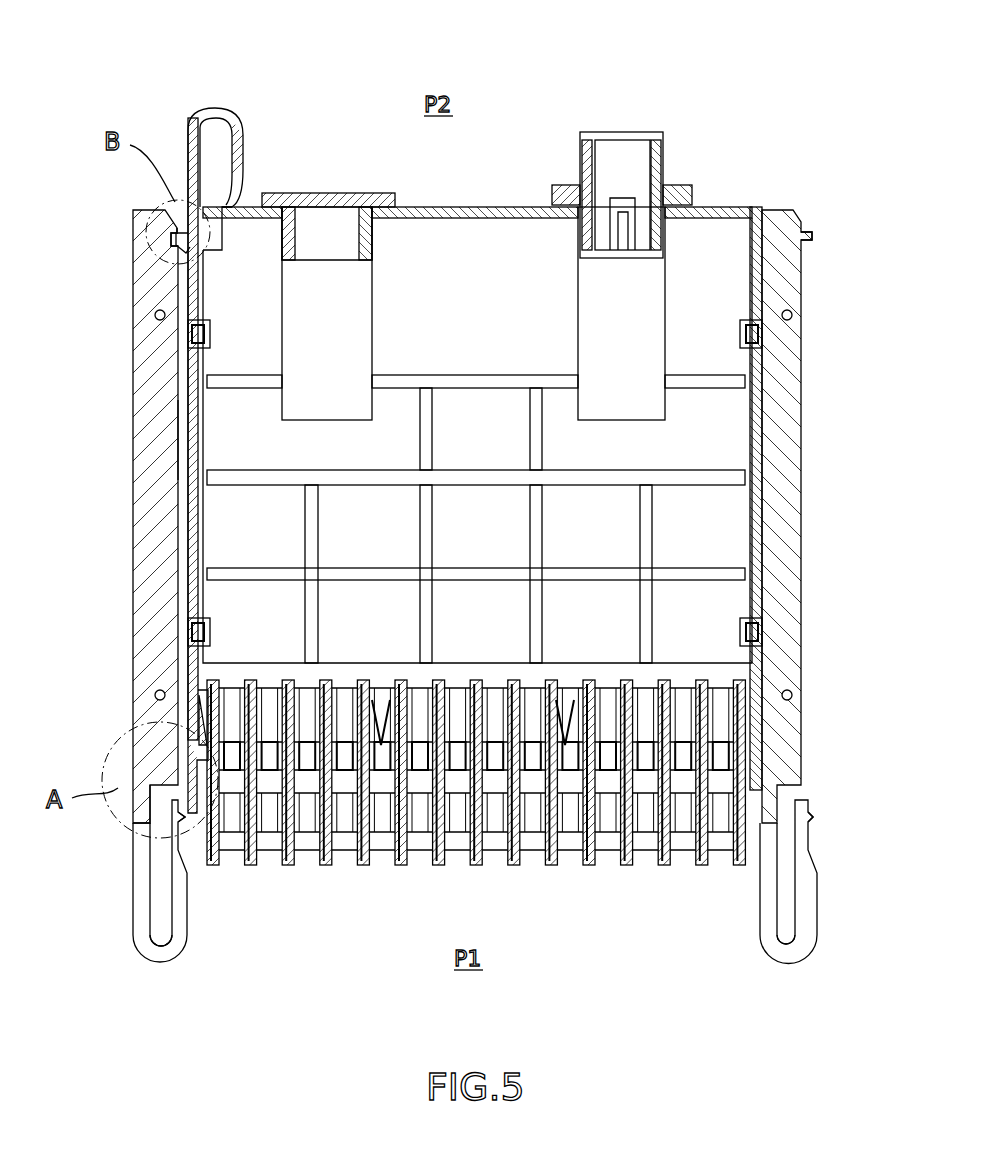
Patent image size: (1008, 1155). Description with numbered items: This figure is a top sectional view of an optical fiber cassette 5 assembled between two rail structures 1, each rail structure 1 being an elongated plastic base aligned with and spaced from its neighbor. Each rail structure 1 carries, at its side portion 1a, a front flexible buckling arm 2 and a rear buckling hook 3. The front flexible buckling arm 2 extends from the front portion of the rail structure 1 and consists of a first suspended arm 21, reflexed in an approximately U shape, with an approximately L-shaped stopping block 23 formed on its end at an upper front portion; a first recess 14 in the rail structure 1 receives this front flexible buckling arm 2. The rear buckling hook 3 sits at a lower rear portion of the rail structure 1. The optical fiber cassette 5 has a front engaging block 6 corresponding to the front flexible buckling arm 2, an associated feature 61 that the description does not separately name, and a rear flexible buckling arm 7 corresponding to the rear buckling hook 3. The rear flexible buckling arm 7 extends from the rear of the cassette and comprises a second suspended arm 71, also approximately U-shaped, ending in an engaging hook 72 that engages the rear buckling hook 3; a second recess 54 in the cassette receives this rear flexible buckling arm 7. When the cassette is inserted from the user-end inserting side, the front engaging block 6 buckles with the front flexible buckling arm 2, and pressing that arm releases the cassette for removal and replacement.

The rail structure 1 is at (150, 500).
The side portion of the rail structure 1a is at (180, 440).
The front flexible buckling arm 2 is at (492, 914).
The first suspended arm 21 is at (172, 952).
The stopping block 23 is at (183, 820).
The rear buckling hook 3 is at (174, 230).
The optical fiber cassette 5 is at (481, 312).
The second recess 54 is at (205, 250).
The front engaging block 6 is at (182, 782).
The elastic contact arm 61 is at (192, 750).
The rear flexible buckling arm 7 is at (182, 383).
The second suspended arm 71 is at (225, 122).
The engaging hook 72 is at (178, 245).
The first recess 14 is at (157, 856).